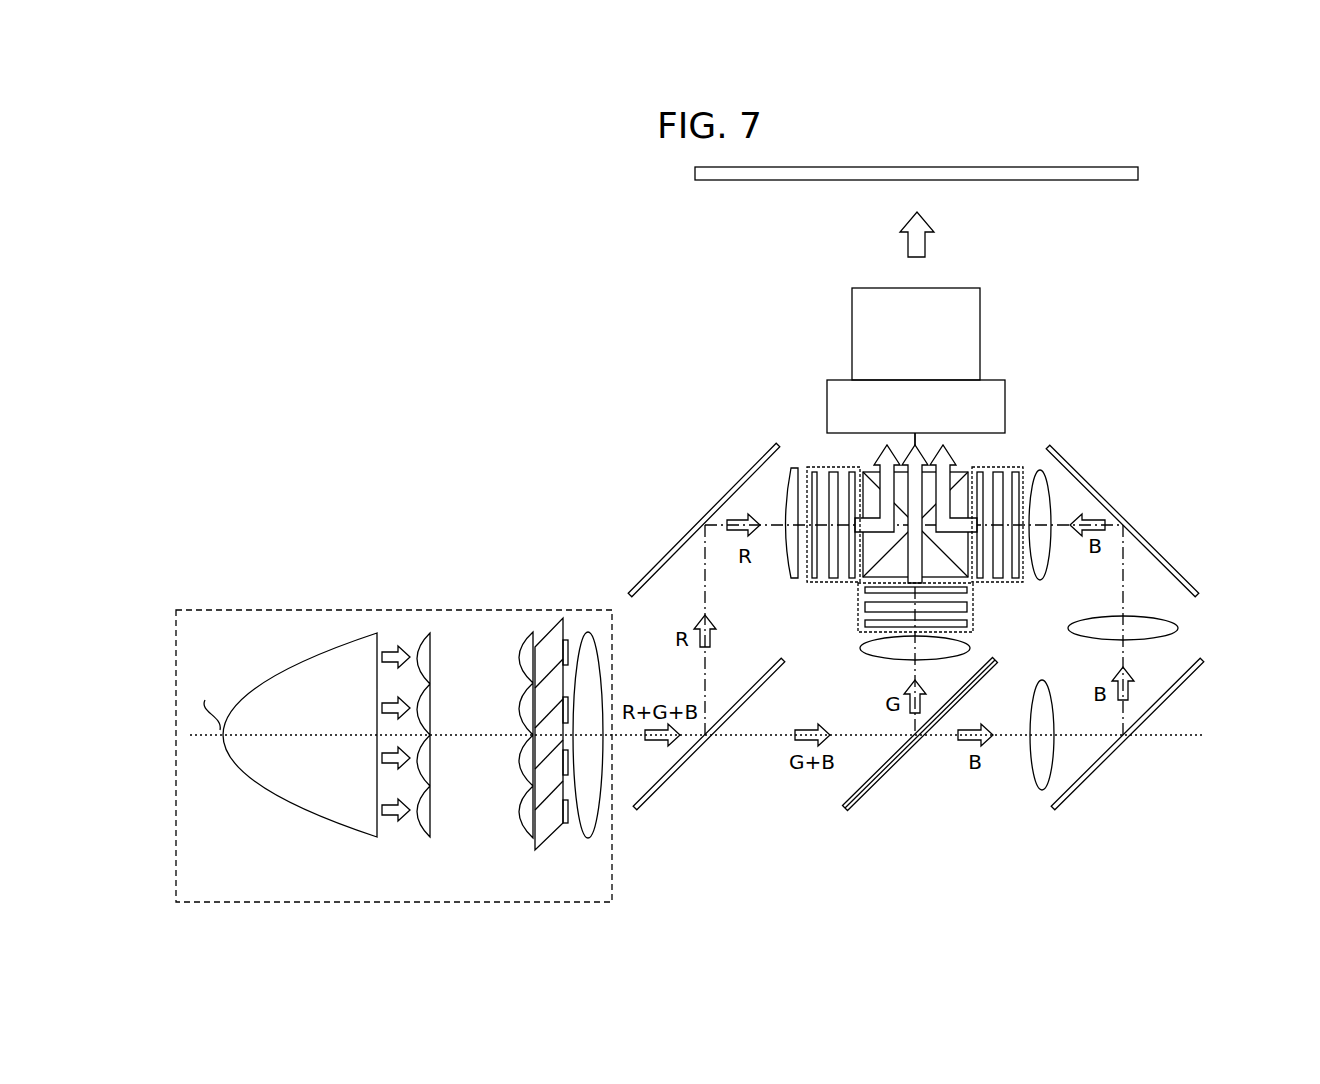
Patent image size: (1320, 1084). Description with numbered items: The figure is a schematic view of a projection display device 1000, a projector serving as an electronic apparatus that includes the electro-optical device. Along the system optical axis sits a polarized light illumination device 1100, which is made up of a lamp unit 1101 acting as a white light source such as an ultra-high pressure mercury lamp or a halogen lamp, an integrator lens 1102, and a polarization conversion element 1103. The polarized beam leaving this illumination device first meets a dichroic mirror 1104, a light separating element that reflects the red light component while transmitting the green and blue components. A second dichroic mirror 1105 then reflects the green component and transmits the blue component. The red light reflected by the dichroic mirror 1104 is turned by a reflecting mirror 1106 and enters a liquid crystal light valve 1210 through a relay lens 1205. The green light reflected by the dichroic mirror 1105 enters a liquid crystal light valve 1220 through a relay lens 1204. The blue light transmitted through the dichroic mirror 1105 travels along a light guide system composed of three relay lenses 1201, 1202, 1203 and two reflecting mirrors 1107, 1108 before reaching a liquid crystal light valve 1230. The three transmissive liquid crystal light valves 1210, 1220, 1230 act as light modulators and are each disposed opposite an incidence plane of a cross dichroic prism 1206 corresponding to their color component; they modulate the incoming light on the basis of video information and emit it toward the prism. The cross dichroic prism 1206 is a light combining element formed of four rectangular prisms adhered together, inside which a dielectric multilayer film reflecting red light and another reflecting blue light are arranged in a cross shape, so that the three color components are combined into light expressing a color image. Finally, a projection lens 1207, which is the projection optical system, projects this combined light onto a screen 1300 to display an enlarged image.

The projection display device 1000 is at (1186, 294).
The polarized light illumination device 1100 is at (410, 608).
The lamp unit 1101 is at (297, 818).
The integrator lens 1102 is at (421, 838).
The polarization conversion element 1103 is at (515, 860).
The dichroic mirror 1104 is at (672, 778).
The dichroic mirror 1105 is at (883, 778).
The reflecting mirror 1106 is at (703, 518).
The reflecting mirror 1107 is at (1092, 778).
The reflecting mirror 1108 is at (1122, 516).
The relay lens 1201 is at (1042, 791).
The relay lens 1202 is at (1178, 628).
The relay lens 1203 is at (1035, 581).
The relay lens 1204 is at (855, 650).
The relay lens 1205 is at (790, 581).
The cross dichroic prism 1206 is at (964, 470).
The projection lens 1207 is at (968, 333).
The liquid crystal light valve 1210 is at (820, 468).
The liquid crystal light valve 1220 is at (975, 627).
The liquid crystal light valve 1230 is at (1012, 468).
The screen 1300 is at (1067, 181).